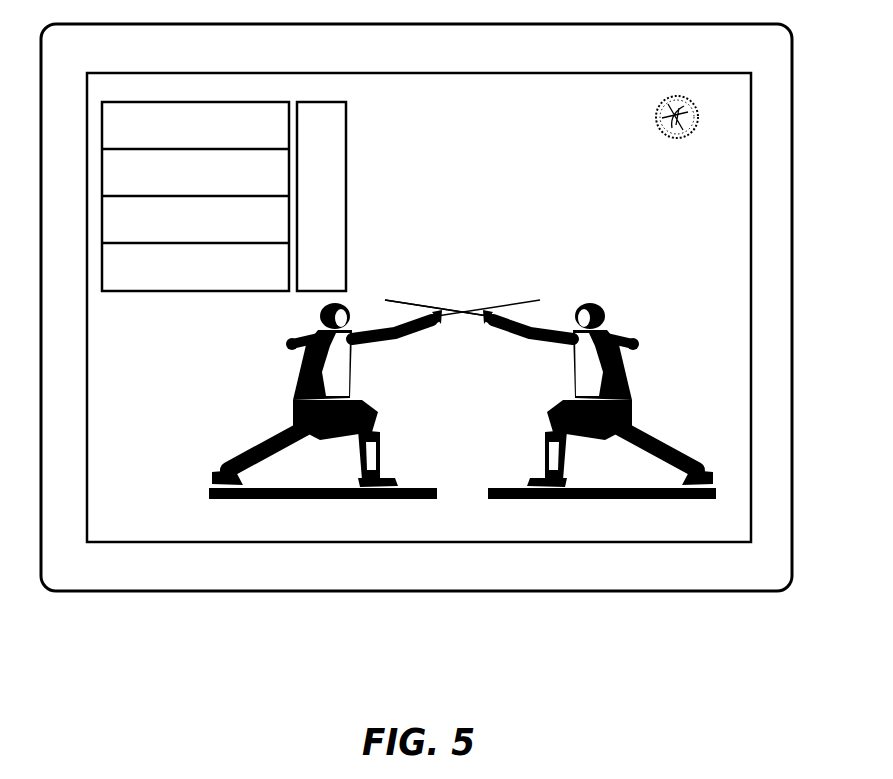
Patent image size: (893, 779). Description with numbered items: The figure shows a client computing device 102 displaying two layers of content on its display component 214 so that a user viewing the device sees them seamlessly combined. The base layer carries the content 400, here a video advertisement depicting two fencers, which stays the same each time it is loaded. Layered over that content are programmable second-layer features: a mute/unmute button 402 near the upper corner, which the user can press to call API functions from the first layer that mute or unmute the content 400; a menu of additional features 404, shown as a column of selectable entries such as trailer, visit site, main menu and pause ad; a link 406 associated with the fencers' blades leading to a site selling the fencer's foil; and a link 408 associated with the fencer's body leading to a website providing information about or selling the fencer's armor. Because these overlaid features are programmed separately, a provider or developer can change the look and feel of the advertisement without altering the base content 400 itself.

The client computing device 102 is at (84, 591).
The display component 214 is at (172, 541).
The content 400 is at (433, 498).
The mute/unmute button 402 is at (667, 133).
The menu of additional features 404 is at (346, 197).
The link to a site selling the fencer's foil 406 is at (508, 302).
The link to fencer's armor 408 is at (300, 371).